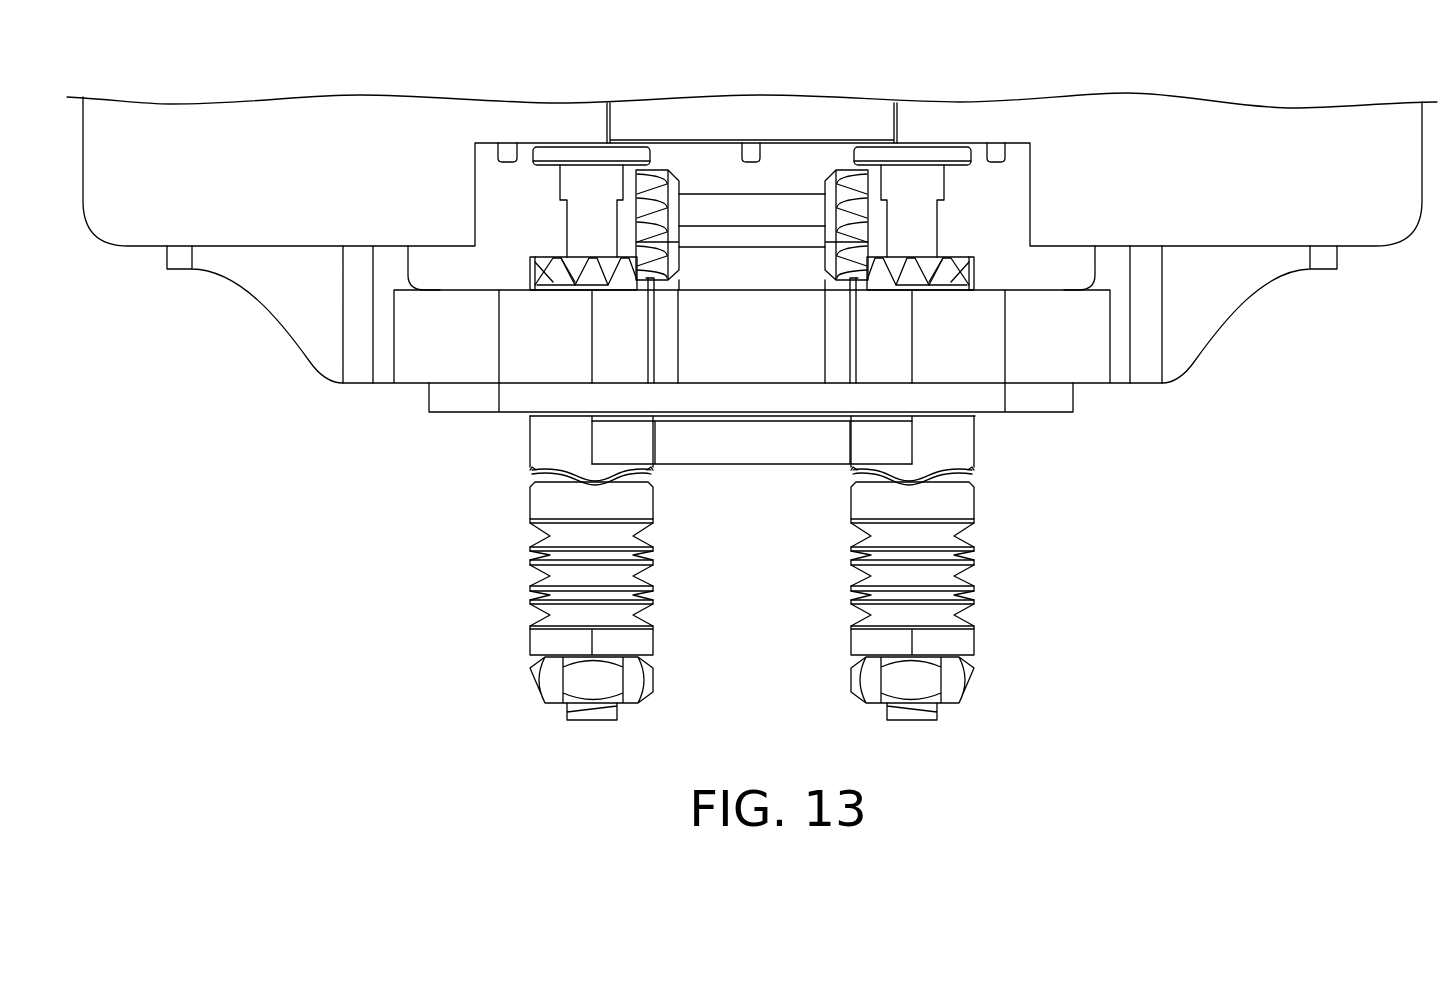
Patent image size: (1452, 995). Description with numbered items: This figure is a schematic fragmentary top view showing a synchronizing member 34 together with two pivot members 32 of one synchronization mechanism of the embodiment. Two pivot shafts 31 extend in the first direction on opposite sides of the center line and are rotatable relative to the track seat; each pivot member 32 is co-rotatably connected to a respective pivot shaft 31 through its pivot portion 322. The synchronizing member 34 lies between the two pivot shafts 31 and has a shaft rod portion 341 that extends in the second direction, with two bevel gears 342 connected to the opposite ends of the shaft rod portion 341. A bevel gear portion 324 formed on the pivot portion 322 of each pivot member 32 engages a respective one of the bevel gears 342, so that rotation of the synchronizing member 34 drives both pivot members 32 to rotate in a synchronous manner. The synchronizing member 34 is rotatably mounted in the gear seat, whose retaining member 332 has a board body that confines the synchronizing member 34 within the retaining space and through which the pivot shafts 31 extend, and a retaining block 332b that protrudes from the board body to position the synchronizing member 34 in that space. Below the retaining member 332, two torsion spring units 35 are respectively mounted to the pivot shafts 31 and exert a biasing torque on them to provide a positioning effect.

The pivot shaft 31 is at (590, 182).
The pivot member 32 is at (752, 304).
The synchronizing member 34 is at (752, 145).
The torsion spring unit 35 is at (542, 583).
The pivot portion 322 is at (615, 352).
The bevel gear portion 324 is at (562, 281).
The retaining member 332 is at (759, 447).
The retaining block 332b is at (748, 357).
The shaft rod portion 341 is at (773, 208).
The bevel gear 342 is at (655, 182).